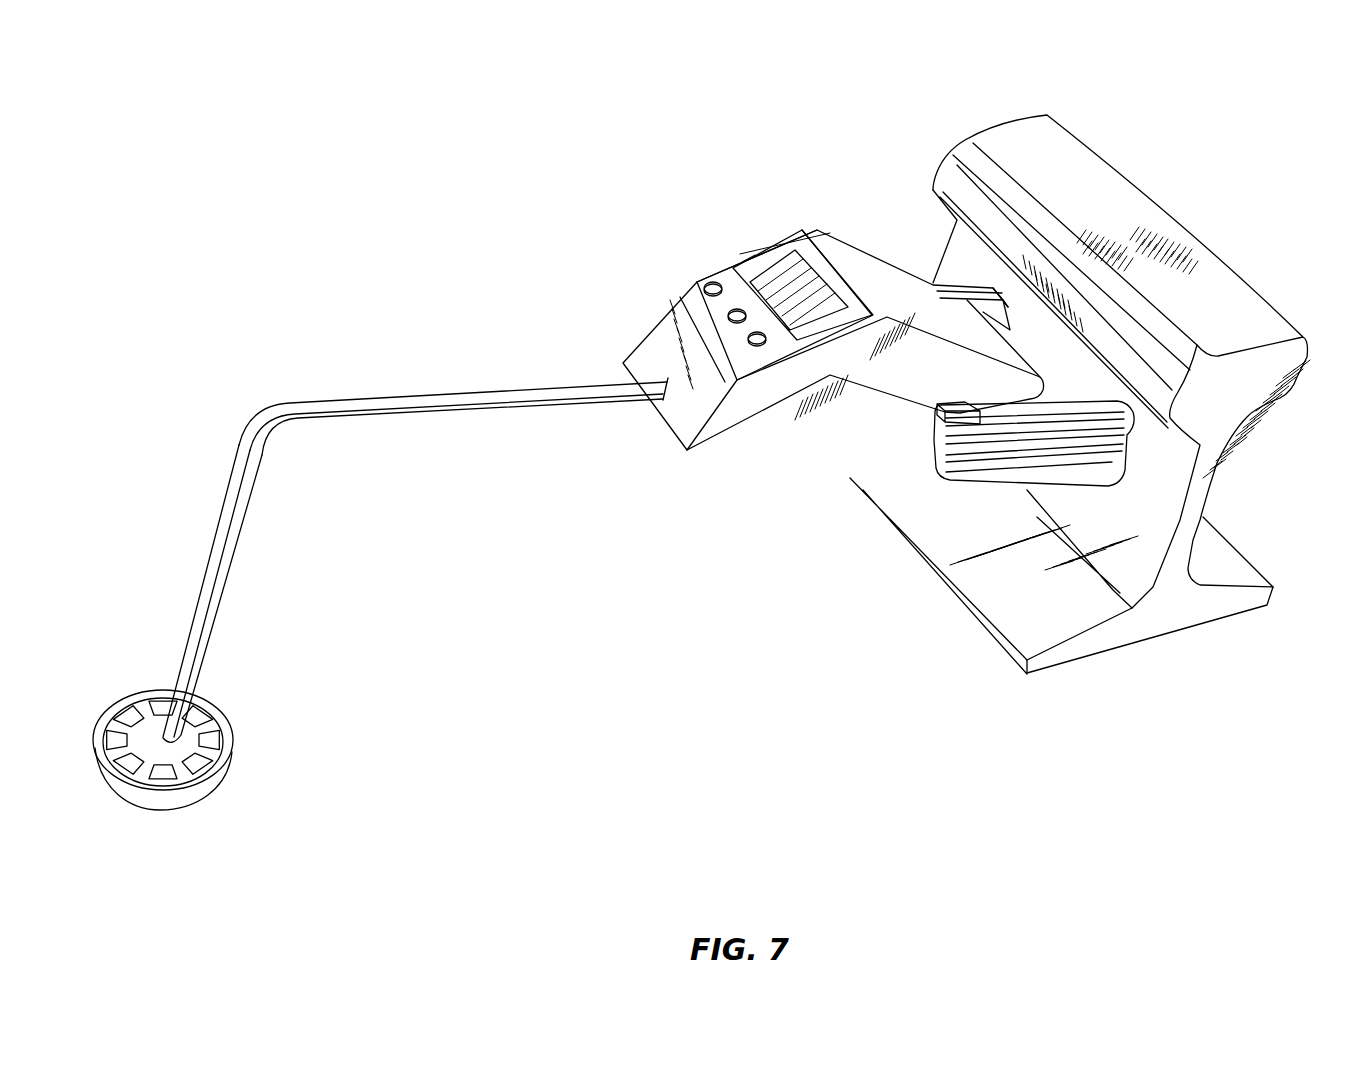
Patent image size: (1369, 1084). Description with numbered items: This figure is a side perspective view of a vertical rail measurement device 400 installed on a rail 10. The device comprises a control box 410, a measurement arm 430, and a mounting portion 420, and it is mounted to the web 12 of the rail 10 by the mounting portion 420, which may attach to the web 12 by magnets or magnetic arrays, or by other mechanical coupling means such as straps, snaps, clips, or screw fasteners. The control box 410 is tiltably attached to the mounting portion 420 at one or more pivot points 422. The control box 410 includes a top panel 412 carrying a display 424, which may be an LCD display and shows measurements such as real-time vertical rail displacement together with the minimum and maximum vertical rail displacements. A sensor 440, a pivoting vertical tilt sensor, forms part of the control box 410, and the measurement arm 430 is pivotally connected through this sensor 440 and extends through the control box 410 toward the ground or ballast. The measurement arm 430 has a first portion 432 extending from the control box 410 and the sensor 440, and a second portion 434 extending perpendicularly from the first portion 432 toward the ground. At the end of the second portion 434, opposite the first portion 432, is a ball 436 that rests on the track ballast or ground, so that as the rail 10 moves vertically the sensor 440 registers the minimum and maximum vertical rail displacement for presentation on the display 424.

The rail 10 is at (1025, 155).
The web 12 is at (1147, 510).
The vertical rail measurement device 400 is at (410, 187).
The control box 410 is at (772, 420).
The top panel 412 is at (697, 290).
The mounting portion 420 is at (1027, 455).
The pivot points 422 is at (943, 410).
The display 424 is at (783, 277).
The measurement arm 430 is at (380, 626).
The first portion 432 is at (397, 404).
The second portion 434 is at (213, 577).
The ball 436 is at (197, 763).
The sensor 440 is at (667, 383).